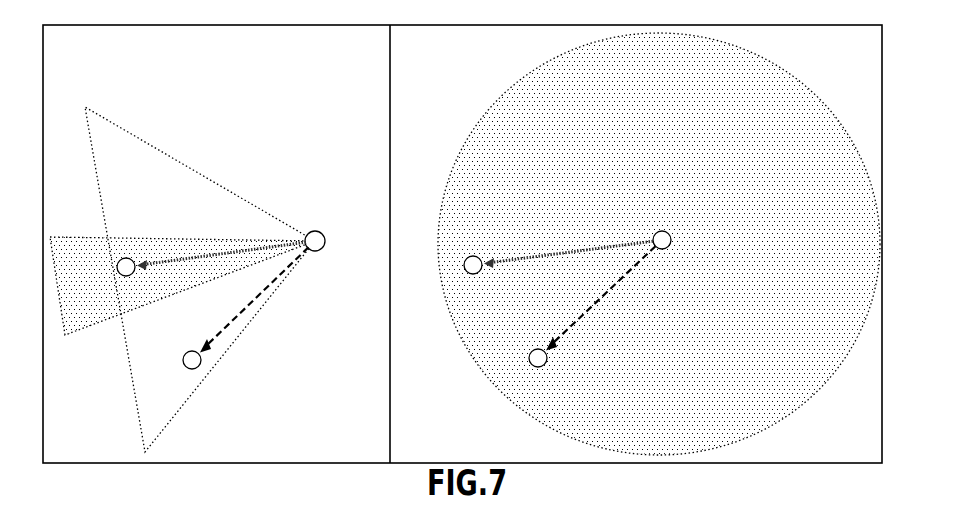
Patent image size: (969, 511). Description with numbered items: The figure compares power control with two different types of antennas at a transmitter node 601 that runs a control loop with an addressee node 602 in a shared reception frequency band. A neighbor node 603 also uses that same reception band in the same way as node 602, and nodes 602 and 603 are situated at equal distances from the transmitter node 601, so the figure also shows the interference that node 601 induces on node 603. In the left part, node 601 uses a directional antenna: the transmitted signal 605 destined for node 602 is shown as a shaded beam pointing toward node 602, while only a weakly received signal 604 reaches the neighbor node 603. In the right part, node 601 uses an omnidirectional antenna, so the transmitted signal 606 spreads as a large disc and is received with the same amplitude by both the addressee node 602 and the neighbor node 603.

The transmitter node 601 is at (321, 229).
The addressee node 602 is at (122, 258).
The neighbor node 603 is at (200, 368).
The weakly received signal 604 is at (207, 182).
The transmitted signal 605 is at (88, 327).
The transmitted signal 606 is at (488, 375).